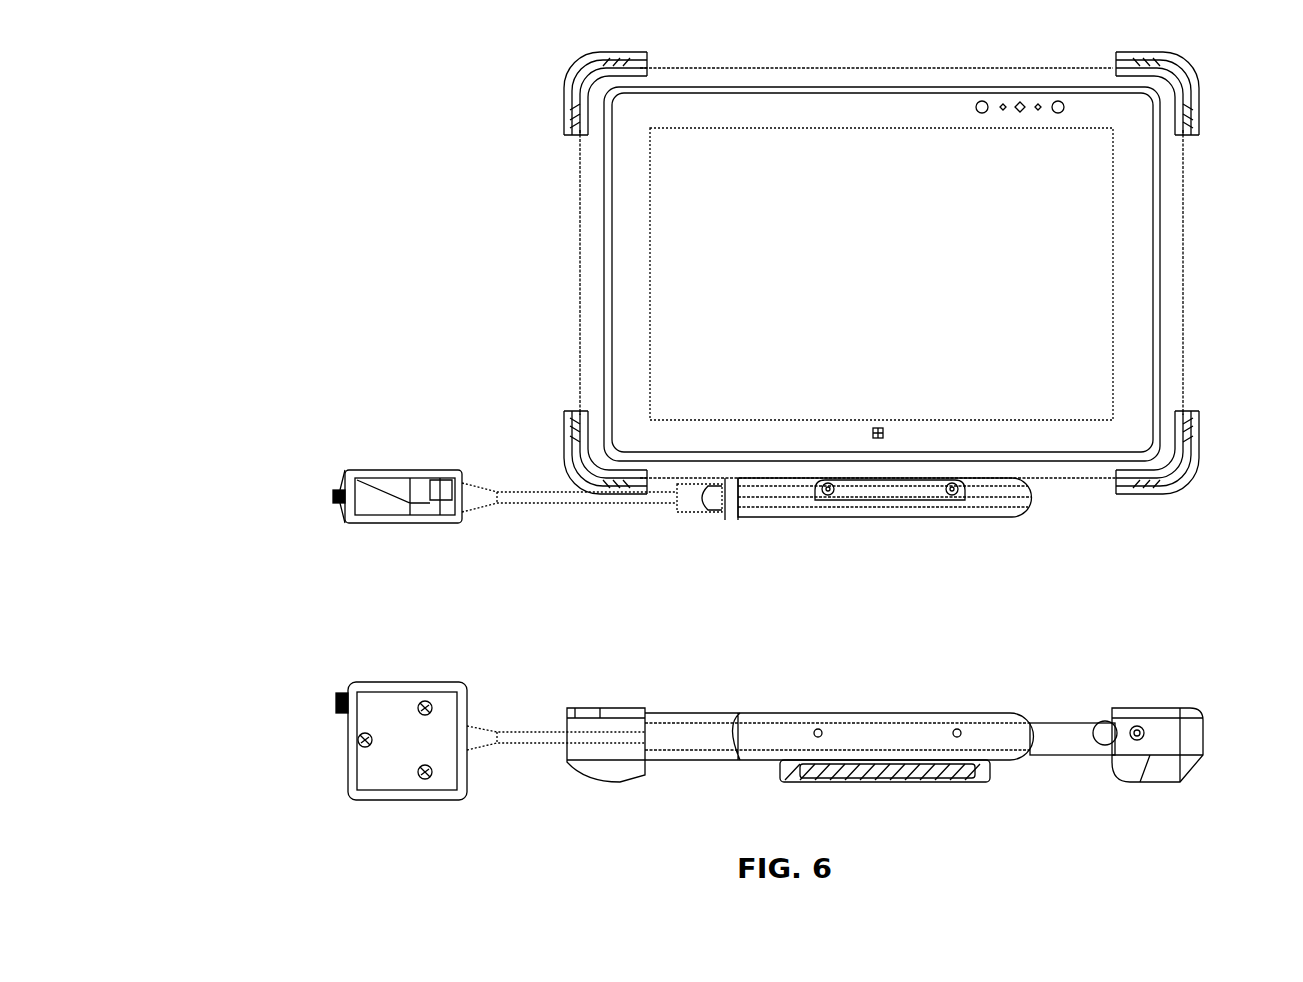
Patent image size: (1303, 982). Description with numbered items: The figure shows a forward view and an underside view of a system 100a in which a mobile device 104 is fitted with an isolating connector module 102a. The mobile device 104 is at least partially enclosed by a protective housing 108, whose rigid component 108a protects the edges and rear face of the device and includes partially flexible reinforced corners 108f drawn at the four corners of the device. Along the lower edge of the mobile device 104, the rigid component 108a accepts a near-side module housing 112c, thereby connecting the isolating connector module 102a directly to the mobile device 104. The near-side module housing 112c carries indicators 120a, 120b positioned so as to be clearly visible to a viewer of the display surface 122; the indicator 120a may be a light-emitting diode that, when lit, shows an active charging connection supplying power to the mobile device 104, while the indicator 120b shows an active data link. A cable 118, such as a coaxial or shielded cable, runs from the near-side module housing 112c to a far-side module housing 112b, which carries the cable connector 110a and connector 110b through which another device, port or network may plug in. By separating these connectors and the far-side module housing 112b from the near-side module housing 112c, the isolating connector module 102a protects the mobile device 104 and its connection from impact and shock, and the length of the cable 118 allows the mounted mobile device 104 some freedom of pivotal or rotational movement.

The system 100a is at (278, 110).
The mobile device 104 is at (533, 287).
The protective housing 108 is at (1185, 355).
The reinforced corners 108f is at (565, 98).
The rigid component 108a is at (1072, 468).
The display surface 122 is at (1095, 257).
The isolating connector module 102a is at (689, 542).
The near-side module housing 112c is at (1003, 505).
The indicator 120a is at (820, 482).
The indicator 120b is at (950, 492).
The cable 118 is at (578, 500).
The far-side module housing 112b is at (418, 478).
The cable connector 110a is at (352, 760).
The connector plug 110b is at (333, 496).